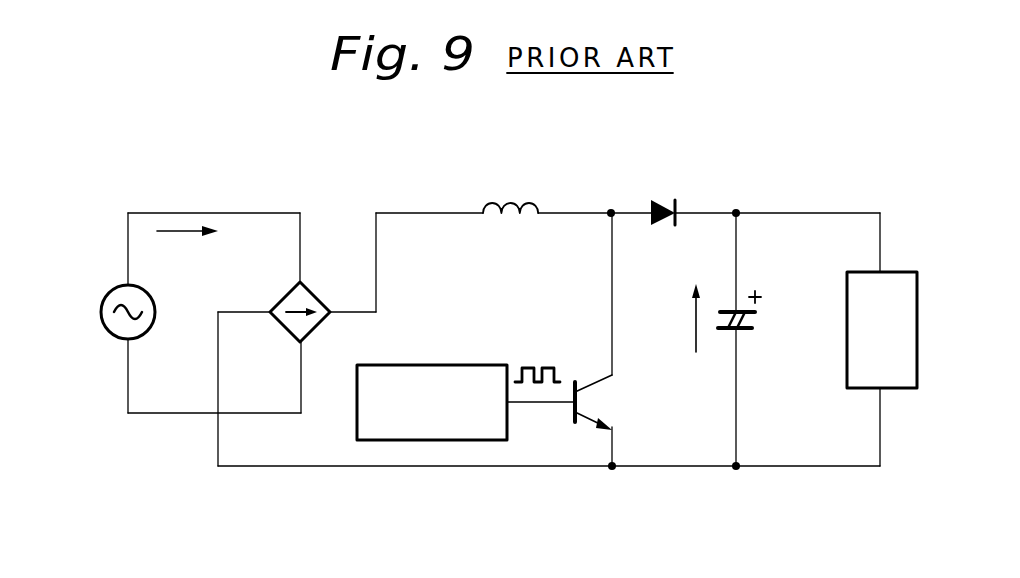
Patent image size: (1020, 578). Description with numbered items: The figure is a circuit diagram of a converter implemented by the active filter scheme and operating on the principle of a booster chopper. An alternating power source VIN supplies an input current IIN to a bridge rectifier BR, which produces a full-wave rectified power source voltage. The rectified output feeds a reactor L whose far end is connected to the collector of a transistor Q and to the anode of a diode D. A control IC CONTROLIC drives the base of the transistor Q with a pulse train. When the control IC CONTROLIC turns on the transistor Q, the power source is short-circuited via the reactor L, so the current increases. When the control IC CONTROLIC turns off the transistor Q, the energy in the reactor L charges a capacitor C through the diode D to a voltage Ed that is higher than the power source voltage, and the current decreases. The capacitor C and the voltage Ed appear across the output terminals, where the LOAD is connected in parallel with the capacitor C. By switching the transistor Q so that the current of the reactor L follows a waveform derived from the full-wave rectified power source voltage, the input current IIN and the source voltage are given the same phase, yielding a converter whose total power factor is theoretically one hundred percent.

The input voltage source VIN is at (108, 313).
The input current IIN is at (187, 245).
The bridge rectifier BR is at (297, 312).
The reactor L is at (510, 190).
The diode D is at (663, 193).
The capacitor C is at (750, 339).
The voltage Ed is at (677, 318).
The load LOAD is at (882, 330).
The control IC CONTROLIC is at (458, 402).
The transistor Q is at (593, 339).